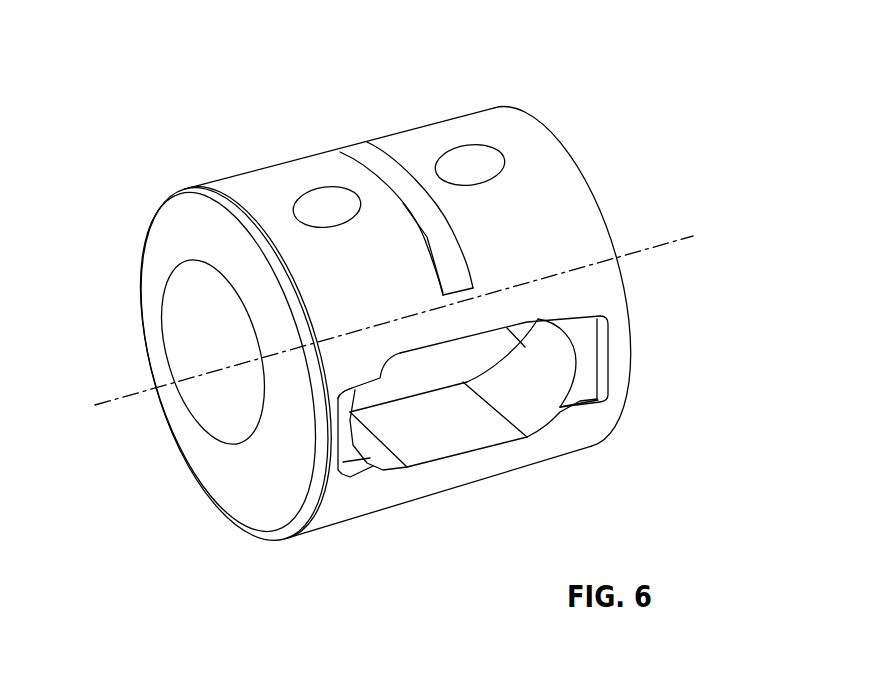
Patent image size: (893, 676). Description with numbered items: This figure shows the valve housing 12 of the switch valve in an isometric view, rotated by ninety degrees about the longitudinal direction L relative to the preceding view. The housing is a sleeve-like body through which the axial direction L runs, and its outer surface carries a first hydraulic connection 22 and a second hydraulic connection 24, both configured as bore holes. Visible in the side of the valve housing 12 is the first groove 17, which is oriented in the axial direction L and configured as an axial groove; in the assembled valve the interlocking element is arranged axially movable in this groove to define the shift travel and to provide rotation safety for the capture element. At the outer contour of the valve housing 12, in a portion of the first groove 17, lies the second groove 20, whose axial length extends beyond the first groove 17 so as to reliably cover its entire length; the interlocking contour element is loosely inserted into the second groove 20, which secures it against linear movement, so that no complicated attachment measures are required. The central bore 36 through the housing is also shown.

The valve housing 12 is at (655, 160).
The first groove 17 is at (474, 436).
The second groove 20 is at (349, 454).
The first hydraulic connection 22 is at (468, 168).
The second hydraulic connection 24 is at (326, 205).
The bore 36 is at (213, 403).
The axial direction L is at (97, 405).